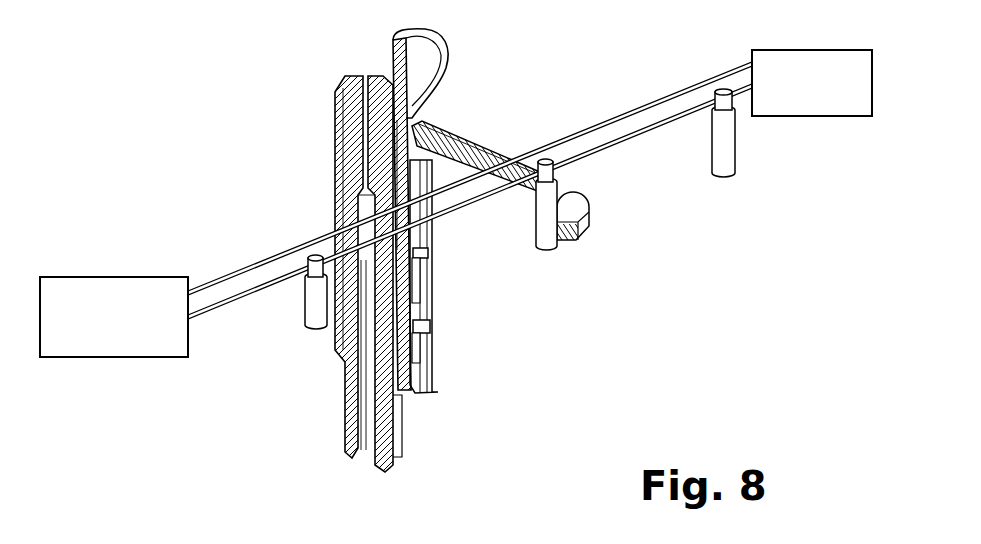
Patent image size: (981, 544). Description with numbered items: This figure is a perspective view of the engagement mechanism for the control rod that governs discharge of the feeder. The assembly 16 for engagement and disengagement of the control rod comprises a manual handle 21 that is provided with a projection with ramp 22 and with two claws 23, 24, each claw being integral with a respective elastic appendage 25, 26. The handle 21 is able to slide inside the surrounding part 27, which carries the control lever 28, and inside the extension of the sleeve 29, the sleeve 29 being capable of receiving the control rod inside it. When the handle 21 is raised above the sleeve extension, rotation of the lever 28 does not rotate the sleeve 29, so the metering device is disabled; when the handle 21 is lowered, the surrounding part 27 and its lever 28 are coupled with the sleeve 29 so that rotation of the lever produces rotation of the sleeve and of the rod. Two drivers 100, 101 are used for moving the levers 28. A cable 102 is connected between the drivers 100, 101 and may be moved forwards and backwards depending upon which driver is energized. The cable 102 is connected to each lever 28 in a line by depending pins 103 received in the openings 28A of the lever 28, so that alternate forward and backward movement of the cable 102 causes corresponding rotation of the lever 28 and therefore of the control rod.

The assembly for engagement and disengagement of the control rod 16 is at (387, 250).
The manual handle 21 is at (438, 66).
The projection with ramp 22 is at (420, 237).
The claw 23 is at (428, 252).
The claw 24 is at (430, 333).
The elastic appendage 25 is at (423, 298).
The elastic appendage 26 is at (423, 358).
The surrounding part 27 is at (343, 152).
The control lever 28 is at (473, 162).
The opening of the lever 28A is at (532, 212).
The sleeve 29 is at (342, 356).
The driver 100 is at (779, 48).
The driver 101 is at (136, 360).
The cable 102 is at (620, 148).
The depending pin 103 is at (735, 155).